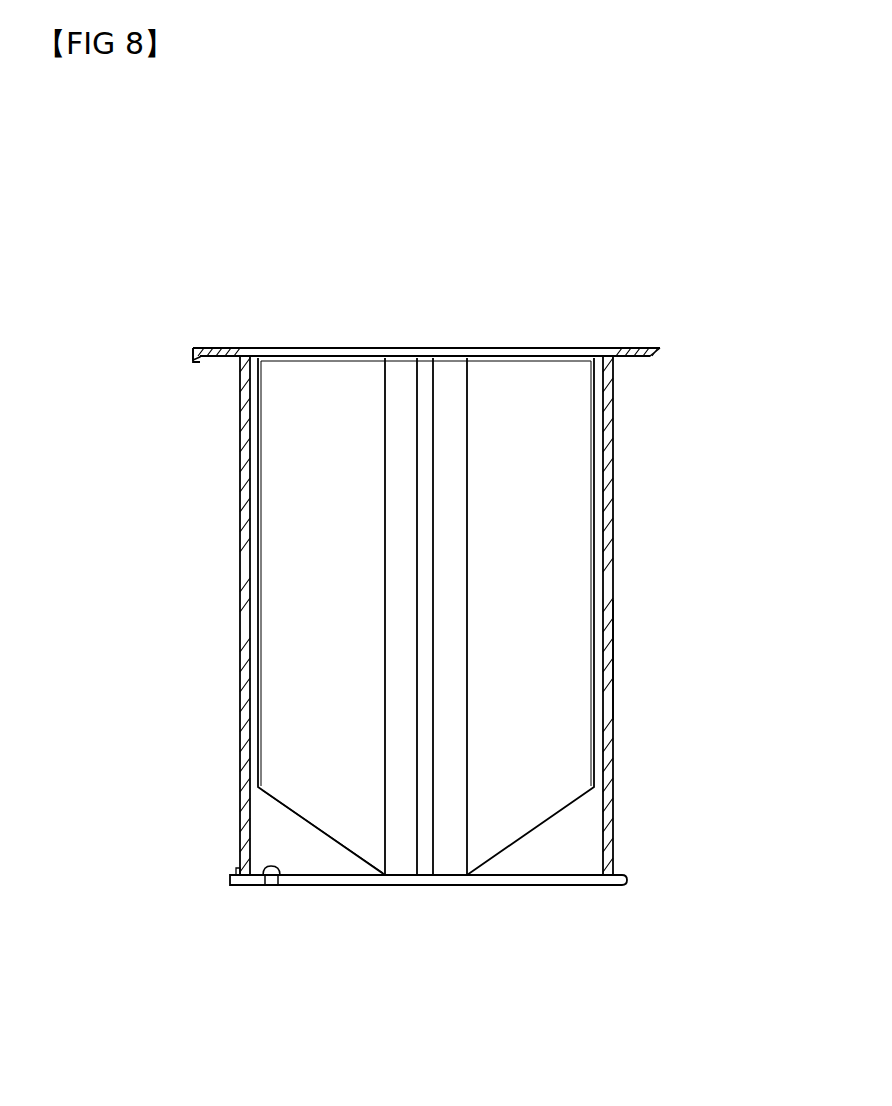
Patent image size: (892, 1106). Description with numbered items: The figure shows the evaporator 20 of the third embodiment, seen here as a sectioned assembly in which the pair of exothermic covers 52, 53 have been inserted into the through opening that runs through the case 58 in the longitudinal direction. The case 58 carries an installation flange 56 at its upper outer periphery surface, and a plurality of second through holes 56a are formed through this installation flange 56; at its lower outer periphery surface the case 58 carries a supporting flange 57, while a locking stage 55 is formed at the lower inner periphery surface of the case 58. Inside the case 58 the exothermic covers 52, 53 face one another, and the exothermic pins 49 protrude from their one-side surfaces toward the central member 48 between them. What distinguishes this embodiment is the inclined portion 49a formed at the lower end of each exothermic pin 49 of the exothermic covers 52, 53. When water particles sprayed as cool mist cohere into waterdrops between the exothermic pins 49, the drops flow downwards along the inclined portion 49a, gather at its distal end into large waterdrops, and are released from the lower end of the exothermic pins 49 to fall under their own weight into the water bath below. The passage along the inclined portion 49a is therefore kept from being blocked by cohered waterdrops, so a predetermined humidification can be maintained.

The cartridge assembly 20 is at (423, 590).
The center tube 48 is at (420, 835).
The exothermic pin 49 is at (268, 627).
The inclined portion 49a is at (328, 835).
The exothermic cover 52 is at (236, 567).
The exothermic cover 53 is at (598, 594).
The locking stage 55 is at (280, 885).
The installation flange 56 is at (195, 362).
The second through hole 56a is at (215, 348).
The supporting flange 57 is at (230, 870).
The case 58 is at (617, 720).